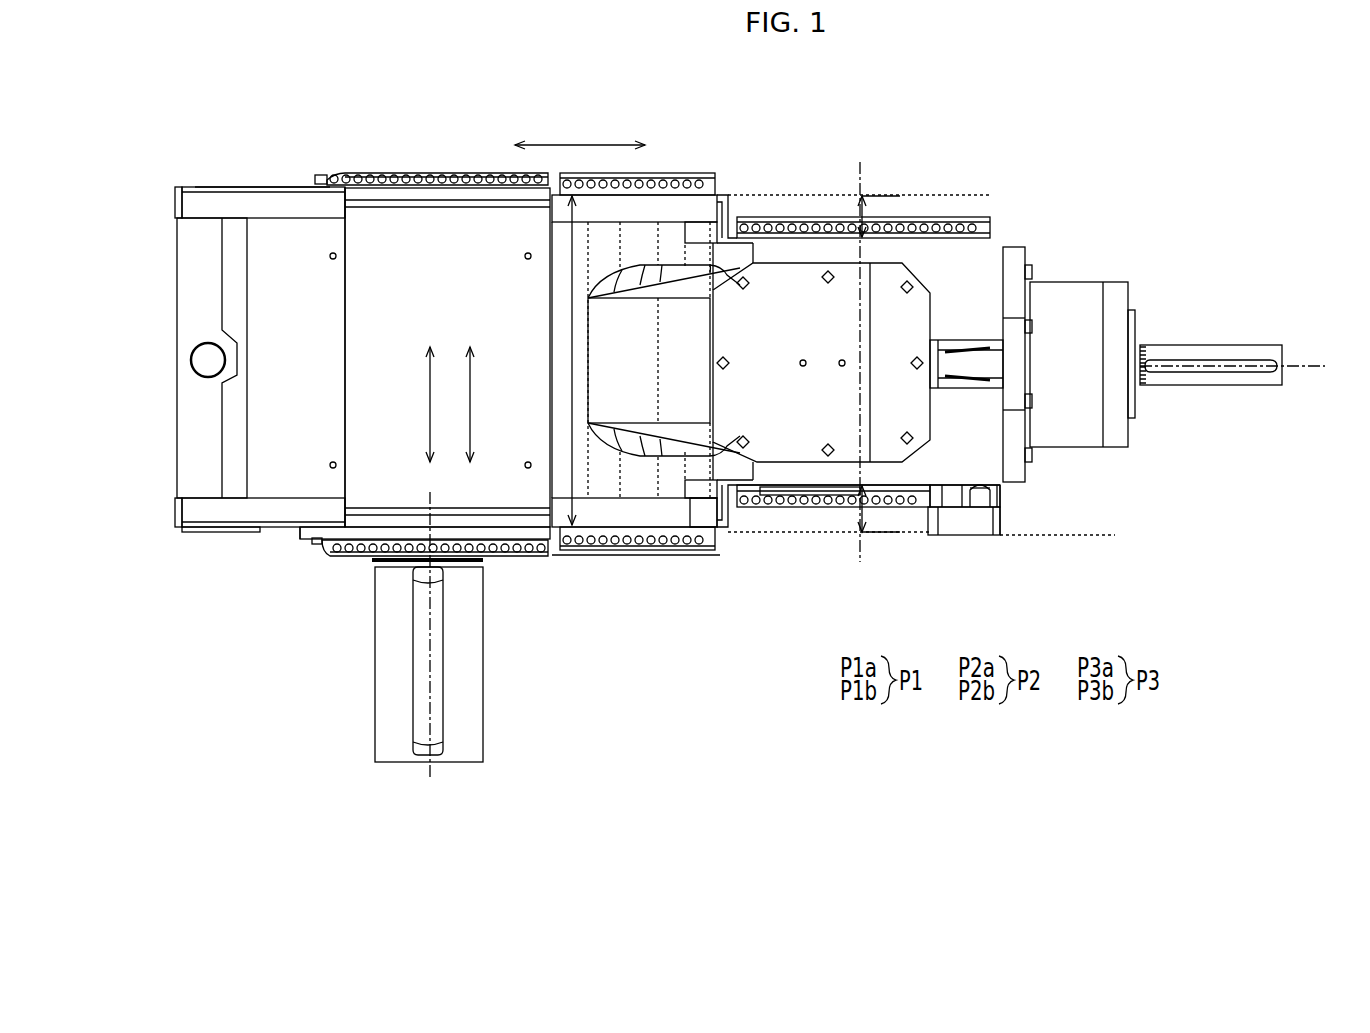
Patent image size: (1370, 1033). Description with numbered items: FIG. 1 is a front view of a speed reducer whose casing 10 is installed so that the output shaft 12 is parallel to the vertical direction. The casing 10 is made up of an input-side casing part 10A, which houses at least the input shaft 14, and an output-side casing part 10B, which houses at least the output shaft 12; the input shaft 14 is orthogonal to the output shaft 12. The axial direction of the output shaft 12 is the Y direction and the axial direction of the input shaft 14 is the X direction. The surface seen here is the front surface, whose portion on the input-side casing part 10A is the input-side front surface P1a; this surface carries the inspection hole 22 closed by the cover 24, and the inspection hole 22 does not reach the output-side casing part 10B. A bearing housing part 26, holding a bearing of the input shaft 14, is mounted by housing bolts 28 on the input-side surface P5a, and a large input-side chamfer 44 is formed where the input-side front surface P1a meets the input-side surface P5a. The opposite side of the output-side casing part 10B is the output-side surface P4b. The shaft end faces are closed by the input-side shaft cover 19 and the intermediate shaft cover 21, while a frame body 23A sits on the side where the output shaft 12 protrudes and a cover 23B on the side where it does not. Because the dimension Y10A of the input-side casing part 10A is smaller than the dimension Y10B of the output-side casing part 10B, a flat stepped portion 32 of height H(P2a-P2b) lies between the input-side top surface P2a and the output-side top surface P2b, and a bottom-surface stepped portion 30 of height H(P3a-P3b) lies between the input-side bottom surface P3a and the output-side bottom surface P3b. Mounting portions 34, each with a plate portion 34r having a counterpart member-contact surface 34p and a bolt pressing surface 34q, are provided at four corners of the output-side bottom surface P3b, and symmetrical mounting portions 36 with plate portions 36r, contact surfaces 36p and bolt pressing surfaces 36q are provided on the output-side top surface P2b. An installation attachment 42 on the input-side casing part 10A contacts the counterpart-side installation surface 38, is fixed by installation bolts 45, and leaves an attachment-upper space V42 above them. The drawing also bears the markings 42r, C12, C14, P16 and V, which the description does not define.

The casing 10 is at (1002, 108).
The input-side casing part 10A is at (826, 190).
The output-side casing part 10B is at (474, 163).
The output shaft 12 is at (472, 698).
The input shaft 14 is at (1195, 385).
The input-side shaft cover 19 is at (838, 500).
The intermediate shaft cover 21 is at (690, 182).
The inspection hole 22 is at (738, 337).
The frame body 23A is at (368, 558).
The cover 23B is at (452, 186).
The cover for the inspection hole 24 is at (735, 395).
The bearing housing part 26 is at (1070, 447).
The housing bolts 28 is at (1030, 398).
The bottom-surface stepped portion 30 is at (735, 520).
The flat stepped portion 32 is at (737, 208).
The mounting portions for vertical installation 34 is at (207, 529).
The counterpart member-contact surface 34p is at (236, 533).
The bolt pressing surface 34q is at (210, 492).
The plate portion 34r is at (185, 514).
The mounting portions for vertical installation 36 is at (208, 183).
The counterpart member-contact surface 36p is at (238, 186).
The bolt pressing surface 36q is at (212, 230).
The plate portion 36r is at (185, 206).
The counterpart-side installation surface 38 is at (1095, 535).
The installation attachment 42 is at (997, 542).
The block side 42r is at (985, 520).
The input-side chamfer 44 is at (953, 470).
The installation bolts 45 is at (980, 485).
The axis of shaft 12 C12 is at (432, 652).
The axis of shaft 14 C14 is at (1318, 364).
The input-side front surface P1a is at (978, 296).
The input-side top surface P2a is at (918, 225).
The output-side top surface P2b is at (600, 185).
The input-side bottom surface P3a is at (950, 508).
The output-side bottom surface P3b is at (598, 552).
The output-side surface P4b is at (174, 274).
The input-side surface P5a is at (1018, 263).
The plane of plate 16 P16 is at (465, 306).
The attachment-upper space V42 is at (992, 475).
The X direction X is at (580, 142).
The Y direction Y is at (427, 410).
The V direction V is at (473, 410).
The dimension of the input-side casing part in the Y direction Y10A is at (858, 340).
The dimension of the output-side casing part in the Y direction Y10B is at (569, 362).